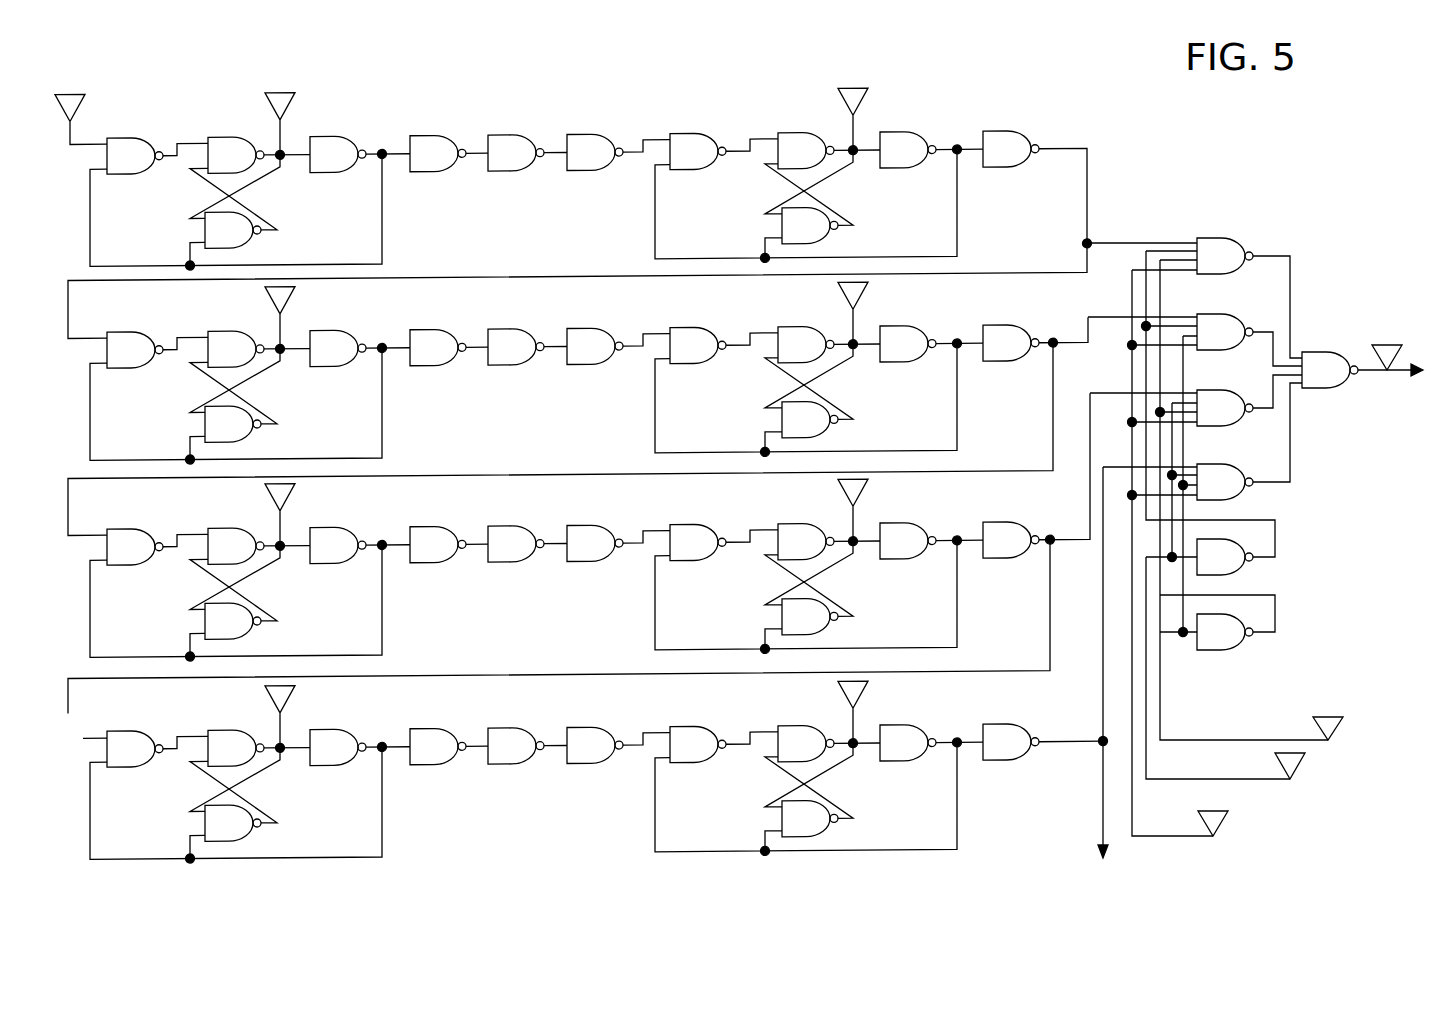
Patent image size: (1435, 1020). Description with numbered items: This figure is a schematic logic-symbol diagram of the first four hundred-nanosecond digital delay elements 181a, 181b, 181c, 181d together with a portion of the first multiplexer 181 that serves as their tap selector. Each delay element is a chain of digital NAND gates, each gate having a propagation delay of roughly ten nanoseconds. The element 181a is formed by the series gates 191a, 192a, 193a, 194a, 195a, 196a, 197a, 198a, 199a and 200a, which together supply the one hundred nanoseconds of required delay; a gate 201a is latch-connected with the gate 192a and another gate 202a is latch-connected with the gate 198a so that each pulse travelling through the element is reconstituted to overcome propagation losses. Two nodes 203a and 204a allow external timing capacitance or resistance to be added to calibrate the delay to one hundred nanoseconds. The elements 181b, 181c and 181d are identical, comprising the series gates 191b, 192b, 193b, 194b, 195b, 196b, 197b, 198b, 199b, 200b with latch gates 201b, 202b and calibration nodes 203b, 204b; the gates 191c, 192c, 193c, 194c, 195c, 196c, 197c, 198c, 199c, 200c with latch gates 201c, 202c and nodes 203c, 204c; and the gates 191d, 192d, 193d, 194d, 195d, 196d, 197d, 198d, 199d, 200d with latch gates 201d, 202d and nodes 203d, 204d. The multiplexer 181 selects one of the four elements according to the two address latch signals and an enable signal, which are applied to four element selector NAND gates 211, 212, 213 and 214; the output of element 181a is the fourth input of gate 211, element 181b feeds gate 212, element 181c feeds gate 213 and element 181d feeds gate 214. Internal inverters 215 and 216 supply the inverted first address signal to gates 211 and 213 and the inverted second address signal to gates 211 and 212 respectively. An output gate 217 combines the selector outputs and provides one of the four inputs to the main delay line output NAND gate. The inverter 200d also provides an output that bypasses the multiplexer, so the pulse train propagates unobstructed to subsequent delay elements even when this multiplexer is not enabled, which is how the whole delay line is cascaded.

The first multiplexer 181 is at (1312, 256).
The delay element 181a is at (583, 99).
The delay element 181b is at (564, 367).
The delay element 181c is at (564, 564).
The delay element 181d is at (561, 766).
The NAND gate 191a is at (117, 138).
The NAND gate 192a is at (248, 136).
The NAND gate 193a is at (315, 138).
The NAND gate 194a is at (452, 136).
The NAND gate 195a is at (479, 138).
The NAND gate 196a is at (562, 138).
The NAND gate 197a is at (714, 136).
The NAND gate 198a is at (818, 136).
The NAND gate 199a is at (885, 138).
The NAND gate 200a is at (975, 138).
The NAND gate 201a is at (250, 245).
The NAND gate 202a is at (826, 245).
The node 203a is at (295, 94).
The node 204a is at (855, 91).
The NAND gate 191b is at (143, 335).
The NAND gate 192b is at (227, 334).
The NAND gate 193b is at (344, 333).
The NAND gate 194b is at (433, 332).
The NAND gate 195b is at (511, 332).
The NAND gate 196b is at (593, 330).
The NAND gate 197b is at (693, 330).
The NAND gate 198b is at (797, 329).
The NAND gate 199b is at (914, 328).
The NAND gate 200b is at (1007, 328).
The NAND gate 201b is at (264, 431).
The NAND gate 202b is at (837, 427).
The node 203b is at (315, 312).
The node 204b is at (885, 308).
The NAND gate 191c is at (142, 532).
The NAND gate 192c is at (227, 531).
The NAND gate 193c is at (343, 530).
The NAND gate 194c is at (433, 529).
The NAND gate 195c is at (511, 529).
The NAND gate 196c is at (592, 527).
The NAND gate 197c is at (693, 527).
The NAND gate 198c is at (797, 526).
The NAND gate 199c is at (913, 525).
The NAND gate 200c is at (1007, 525).
The NAND gate 201c is at (263, 628).
The NAND gate 202c is at (836, 624).
The node 203c is at (314, 509).
The node 204c is at (884, 505).
The NAND gate 191d is at (143, 734).
The NAND gate 192d is at (227, 733).
The NAND gate 193d is at (344, 732).
The NAND gate 194d is at (433, 731).
The NAND gate 195d is at (511, 731).
The NAND gate 196d is at (593, 729).
The NAND gate 197d is at (693, 729).
The NAND gate 198d is at (797, 728).
The NAND gate 199d is at (914, 727).
The inverter 200d is at (1007, 727).
The NAND gate 201d is at (264, 830).
The NAND gate 202d is at (837, 826).
The node 203d is at (315, 711).
The node 204d is at (885, 707).
The element selector NAND gate 211 is at (1246, 238).
The element selector NAND gate 212 is at (1230, 313).
The element selector NAND gate 213 is at (1216, 390).
The element selector NAND gate 214 is at (1218, 465).
The internal inverter 215 is at (1248, 566).
The internal inverter 216 is at (1254, 643).
The output gate 217 is at (1303, 388).